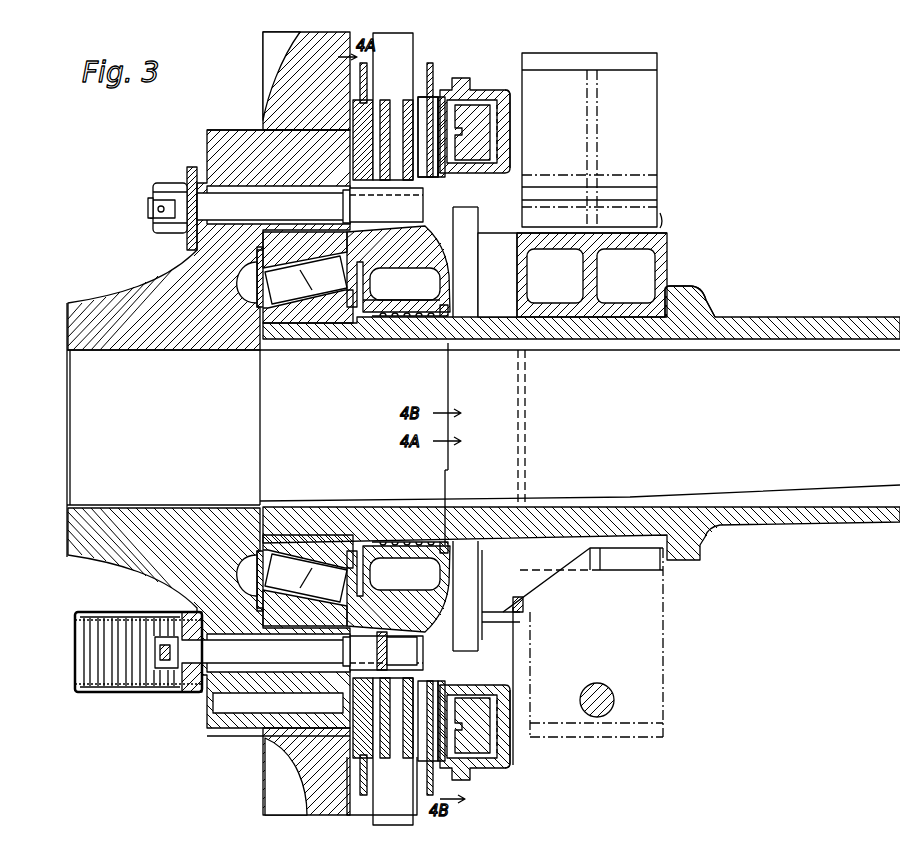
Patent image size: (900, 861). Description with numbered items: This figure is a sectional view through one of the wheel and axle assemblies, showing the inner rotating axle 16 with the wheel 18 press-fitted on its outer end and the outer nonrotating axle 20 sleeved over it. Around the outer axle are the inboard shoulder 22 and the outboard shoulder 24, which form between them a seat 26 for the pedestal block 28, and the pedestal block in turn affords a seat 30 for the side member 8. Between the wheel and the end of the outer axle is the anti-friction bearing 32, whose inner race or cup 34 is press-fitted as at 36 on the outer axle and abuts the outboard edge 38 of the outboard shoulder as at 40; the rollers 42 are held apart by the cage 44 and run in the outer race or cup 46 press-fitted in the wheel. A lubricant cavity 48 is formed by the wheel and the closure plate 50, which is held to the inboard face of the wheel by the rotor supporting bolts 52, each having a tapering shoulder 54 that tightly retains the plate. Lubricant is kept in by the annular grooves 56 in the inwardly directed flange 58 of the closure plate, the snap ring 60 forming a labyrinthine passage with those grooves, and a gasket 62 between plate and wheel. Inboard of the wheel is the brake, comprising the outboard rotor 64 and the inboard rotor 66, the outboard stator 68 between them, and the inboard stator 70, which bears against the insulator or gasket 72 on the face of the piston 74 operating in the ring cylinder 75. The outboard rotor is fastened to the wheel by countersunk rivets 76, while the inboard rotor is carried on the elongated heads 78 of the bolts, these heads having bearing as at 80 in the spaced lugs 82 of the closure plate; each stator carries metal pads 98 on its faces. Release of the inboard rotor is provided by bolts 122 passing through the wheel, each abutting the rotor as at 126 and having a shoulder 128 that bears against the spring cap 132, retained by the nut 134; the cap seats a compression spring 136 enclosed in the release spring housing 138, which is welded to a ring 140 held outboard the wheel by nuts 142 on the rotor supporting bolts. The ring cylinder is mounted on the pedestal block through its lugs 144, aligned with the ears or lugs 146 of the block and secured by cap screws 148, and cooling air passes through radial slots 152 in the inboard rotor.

The side member 8 is at (590, 66).
The inner rotating axle 16 is at (483, 444).
The wheel 18 is at (118, 302).
The outer nonrotating axle 20 is at (867, 318).
The inboard shoulder 22 is at (695, 291).
The outboard shoulder 24 is at (475, 300).
The seat 26 is at (594, 312).
The pedestal block 28 is at (668, 243).
The seat 30 is at (589, 235).
The anti-friction bearing 32 is at (256, 290).
The inner race or cup 34 is at (226, 352).
The press fit 36 is at (290, 328).
The outboard edge 38 is at (322, 330).
The abutment 40 is at (358, 347).
The rollers 42 is at (343, 518).
The cage 44 is at (300, 522).
The outer race or cup 46 is at (248, 540).
The lubricant cavity 48 is at (228, 545).
The closure plate 50 is at (428, 522).
The rotor supporting bolts 52 is at (153, 208).
The tapering shoulder 54 is at (262, 126).
The annular grooves 56 is at (396, 318).
The inwardly directed flange 58 is at (387, 522).
The snap ring 60 is at (442, 315).
The gasket 62 is at (328, 221).
The outboard rotor 64 is at (306, 423).
The inboard rotor 66 is at (398, 113).
The outboard stator 68 is at (367, 63).
The inboard stator 70 is at (431, 66).
The insulator or gasket 72 is at (440, 96).
The piston 74 is at (468, 118).
The ring cylinder 75 is at (510, 95).
The countersunk rivets 76 is at (243, 703).
The elongated heads 78 is at (428, 221).
The bearing 80 is at (424, 203).
The lugs 82 is at (410, 247).
The metal pads 98 is at (430, 760).
The bolts 122 is at (215, 692).
The abutment 126 is at (418, 664).
The shoulder 128 is at (172, 637).
The spring cap 132 is at (166, 697).
The nut 134 is at (148, 616).
The compression spring 136 is at (121, 688).
The release spring housing 138 is at (83, 696).
The ring 140 is at (190, 167).
The nuts 142 is at (167, 183).
The lugs 144 is at (463, 607).
The ears or lugs 146 is at (488, 618).
The cap screws 148 is at (524, 602).
The radial slots 152 is at (399, 112).